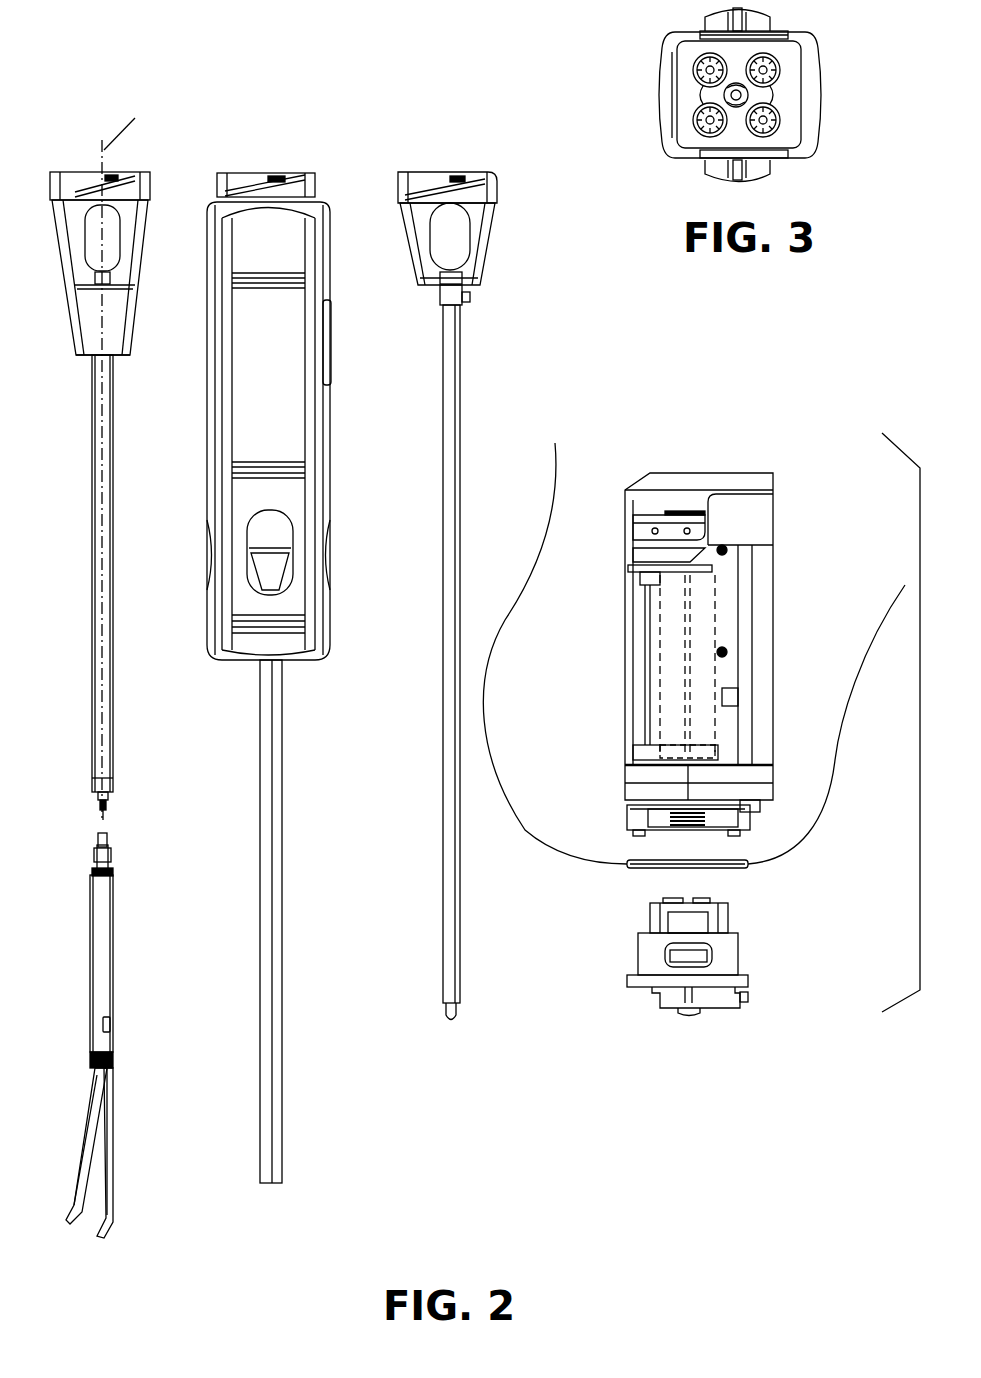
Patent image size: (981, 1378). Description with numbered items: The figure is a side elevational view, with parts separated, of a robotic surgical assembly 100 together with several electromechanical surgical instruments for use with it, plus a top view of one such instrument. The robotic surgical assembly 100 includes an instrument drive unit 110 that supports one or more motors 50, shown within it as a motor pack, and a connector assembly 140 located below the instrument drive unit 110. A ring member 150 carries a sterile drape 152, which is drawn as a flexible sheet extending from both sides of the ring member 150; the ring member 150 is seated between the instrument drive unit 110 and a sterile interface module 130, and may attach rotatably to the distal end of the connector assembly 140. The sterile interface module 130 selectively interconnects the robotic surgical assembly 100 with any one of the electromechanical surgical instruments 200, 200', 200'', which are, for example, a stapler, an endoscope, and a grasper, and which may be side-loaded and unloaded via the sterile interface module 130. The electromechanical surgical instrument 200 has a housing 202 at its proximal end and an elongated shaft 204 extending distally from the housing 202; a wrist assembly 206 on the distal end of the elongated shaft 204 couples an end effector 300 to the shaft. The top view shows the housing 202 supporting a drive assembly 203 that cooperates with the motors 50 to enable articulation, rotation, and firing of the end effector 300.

In FIG. 2, the robotic surgical assembly 100 is at (710, 725).
In FIG. 2, the instrument drive unit 110 is at (625, 630).
In FIG. 2, the motors 50 is at (662, 689).
In FIG. 2, the sterile interface module 130 is at (745, 965).
In FIG. 2, the connector assembly 140 is at (622, 816).
In FIG. 2, the ring member 150 is at (760, 872).
In FIG. 2, the sterile drape 152 is at (517, 600).
In FIG. 2, the electromechanical surgical instrument 200 is at (95, 461).
In FIG. 3, the electromechanical surgical instrument 200 is at (746, 100).
In FIG. 2, the electromechanical surgical instrument 200' is at (284, 678).
In FIG. 2, the electromechanical surgical instrument 200'' is at (463, 596).
In FIG. 2, the housing 202 is at (52, 212).
In FIG. 3, the drive assembly 203 is at (695, 136).
In FIG. 2, the elongated shaft 204 is at (90, 533).
In FIG. 2, the wrist assembly 206 is at (96, 798).
In FIG. 2, the end effector 300 is at (90, 1015).